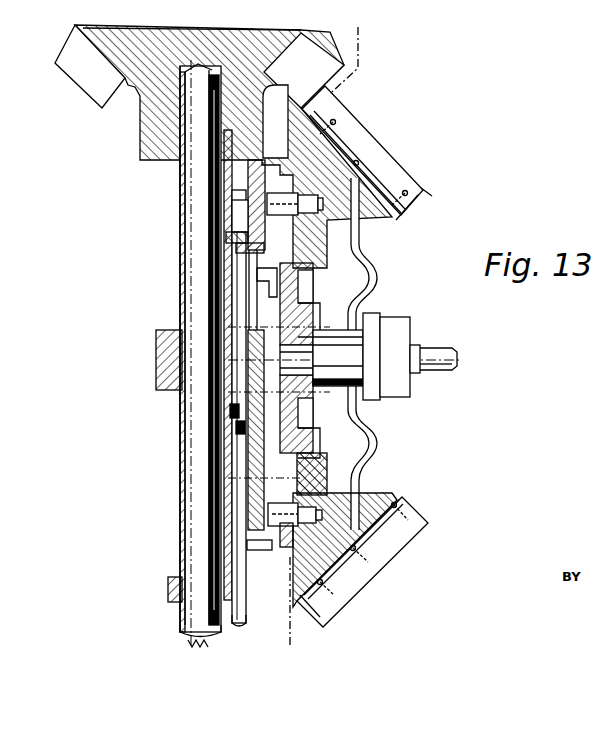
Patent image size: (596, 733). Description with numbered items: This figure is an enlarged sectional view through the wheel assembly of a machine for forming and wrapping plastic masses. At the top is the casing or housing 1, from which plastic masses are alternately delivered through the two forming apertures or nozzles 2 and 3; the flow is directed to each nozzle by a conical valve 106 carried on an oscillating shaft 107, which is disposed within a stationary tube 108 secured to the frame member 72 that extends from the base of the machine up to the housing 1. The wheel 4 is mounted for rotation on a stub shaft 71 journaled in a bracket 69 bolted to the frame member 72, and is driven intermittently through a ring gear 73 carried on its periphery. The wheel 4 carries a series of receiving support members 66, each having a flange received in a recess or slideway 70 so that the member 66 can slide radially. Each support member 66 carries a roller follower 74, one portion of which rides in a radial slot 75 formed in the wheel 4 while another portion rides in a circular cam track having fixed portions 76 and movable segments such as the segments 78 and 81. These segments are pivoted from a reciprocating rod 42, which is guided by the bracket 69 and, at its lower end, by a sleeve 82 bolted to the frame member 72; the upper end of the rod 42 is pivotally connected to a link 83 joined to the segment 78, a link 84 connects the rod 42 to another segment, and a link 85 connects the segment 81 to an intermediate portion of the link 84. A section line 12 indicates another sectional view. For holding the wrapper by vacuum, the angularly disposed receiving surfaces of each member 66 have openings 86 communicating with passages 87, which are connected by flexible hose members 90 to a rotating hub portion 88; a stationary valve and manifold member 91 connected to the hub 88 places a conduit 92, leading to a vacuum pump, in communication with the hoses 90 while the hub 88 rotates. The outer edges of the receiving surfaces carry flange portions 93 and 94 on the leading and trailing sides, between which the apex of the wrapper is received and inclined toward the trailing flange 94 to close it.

The casing or housing 1 is at (145, 141).
The forming aperture or nozzle 2 is at (318, 43).
The forming aperture or nozzle 3 is at (57, 62).
The wheel 4 is at (292, 298).
The section line 12 is at (362, 40).
The reciprocating rod 42 is at (232, 303).
The support member 66 is at (416, 175).
The bracket 69 is at (210, 317).
The recess or slideway 70 is at (300, 278).
The stub shaft 71 is at (306, 348).
The frame member 72 is at (183, 228).
The ring gear 73 is at (280, 160).
The roller follower 74 is at (255, 203).
The radial slot 75 is at (305, 233).
The fixed portion of cam track 76 is at (268, 298).
The movable segment 78 is at (262, 226).
The movable segment 81 is at (288, 440).
The sleeve 82 is at (172, 578).
The link 83 is at (211, 266).
The link 84 is at (238, 426).
The link 85 is at (230, 410).
The opening 86 is at (350, 150).
The passage 87 is at (390, 190).
The rotating hub portion 88 is at (352, 336).
The flexible hose member 90 is at (375, 281).
The stationary valve and manifold member 91 is at (402, 325).
The conduit 92 is at (441, 348).
The flange portion 93 is at (407, 497).
The flange portion 94 is at (433, 203).
The conical valve 106 is at (166, 42).
The oscillating shaft 107 is at (193, 115).
The stationary tube 108 is at (183, 205).